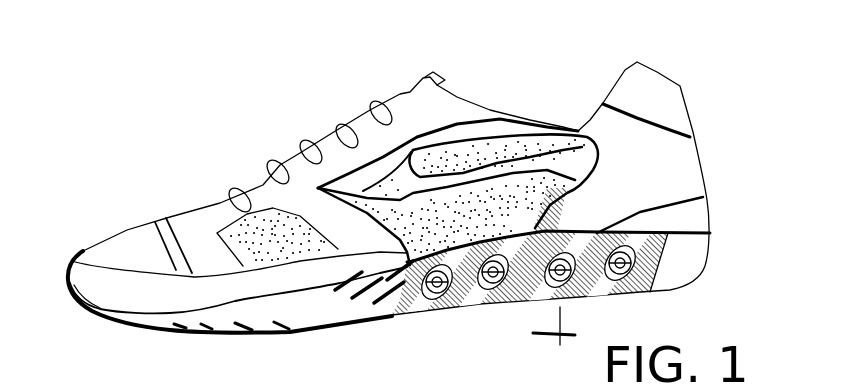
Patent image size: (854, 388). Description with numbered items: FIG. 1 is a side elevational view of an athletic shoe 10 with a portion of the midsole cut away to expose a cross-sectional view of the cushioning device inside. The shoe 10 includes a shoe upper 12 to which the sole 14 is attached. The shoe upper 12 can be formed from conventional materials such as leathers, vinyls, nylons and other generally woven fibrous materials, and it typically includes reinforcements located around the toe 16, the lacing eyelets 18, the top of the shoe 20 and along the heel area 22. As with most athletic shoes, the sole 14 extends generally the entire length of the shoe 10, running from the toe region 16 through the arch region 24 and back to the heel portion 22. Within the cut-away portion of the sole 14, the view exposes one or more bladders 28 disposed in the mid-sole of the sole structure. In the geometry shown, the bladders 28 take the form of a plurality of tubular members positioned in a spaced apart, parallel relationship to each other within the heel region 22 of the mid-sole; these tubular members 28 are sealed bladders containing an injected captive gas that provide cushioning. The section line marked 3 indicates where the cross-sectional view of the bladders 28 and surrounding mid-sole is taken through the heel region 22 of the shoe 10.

The shoe 10 is at (263, 157).
The shoe upper 12 is at (222, 215).
The sole 14 is at (222, 307).
The toe 16 is at (117, 250).
The lacing eyelets 18 is at (401, 108).
The top of the shoe 20 is at (650, 103).
The heel area 22 is at (713, 227).
The arch region 24 is at (413, 292).
The bladder 28 is at (633, 295).
The section line 3- 3 is at (541, 281).